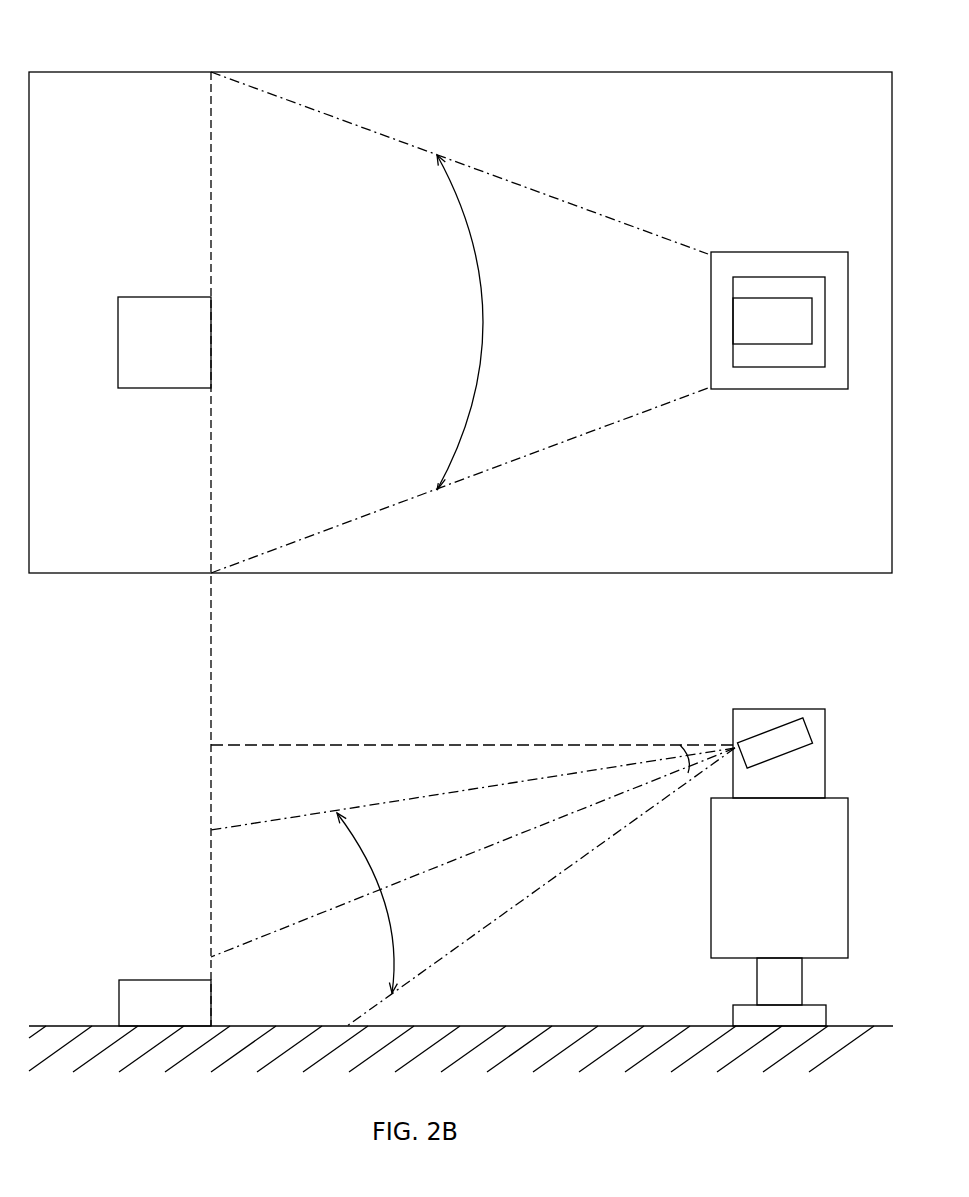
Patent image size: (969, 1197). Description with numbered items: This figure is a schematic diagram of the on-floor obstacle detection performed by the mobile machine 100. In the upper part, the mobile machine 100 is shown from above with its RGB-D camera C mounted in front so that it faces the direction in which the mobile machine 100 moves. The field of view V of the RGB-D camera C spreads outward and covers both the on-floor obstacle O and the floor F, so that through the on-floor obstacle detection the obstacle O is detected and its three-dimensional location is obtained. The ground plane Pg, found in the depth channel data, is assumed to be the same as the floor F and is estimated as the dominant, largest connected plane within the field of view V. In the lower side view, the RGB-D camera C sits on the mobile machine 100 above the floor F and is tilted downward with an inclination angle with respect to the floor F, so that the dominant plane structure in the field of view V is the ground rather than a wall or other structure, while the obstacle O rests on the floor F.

The mobile machine 100 is at (757, 252).
The RGB-D camera C is at (733, 312).
The on-floor obstacle O is at (141, 297).
The floor F is at (165, 72).
The field of view V is at (473, 549).
The ground plane Pg is at (211, 512).